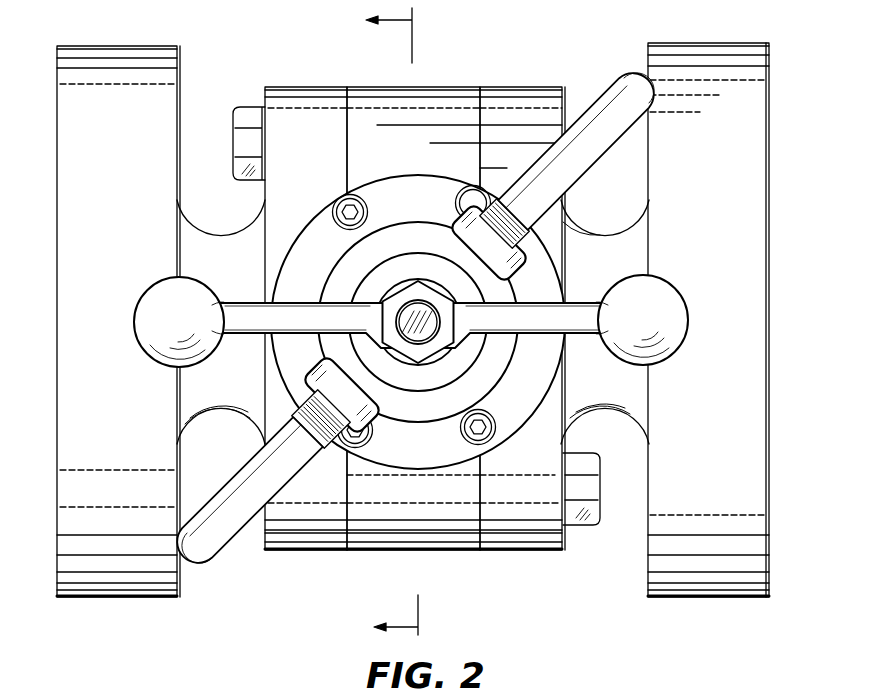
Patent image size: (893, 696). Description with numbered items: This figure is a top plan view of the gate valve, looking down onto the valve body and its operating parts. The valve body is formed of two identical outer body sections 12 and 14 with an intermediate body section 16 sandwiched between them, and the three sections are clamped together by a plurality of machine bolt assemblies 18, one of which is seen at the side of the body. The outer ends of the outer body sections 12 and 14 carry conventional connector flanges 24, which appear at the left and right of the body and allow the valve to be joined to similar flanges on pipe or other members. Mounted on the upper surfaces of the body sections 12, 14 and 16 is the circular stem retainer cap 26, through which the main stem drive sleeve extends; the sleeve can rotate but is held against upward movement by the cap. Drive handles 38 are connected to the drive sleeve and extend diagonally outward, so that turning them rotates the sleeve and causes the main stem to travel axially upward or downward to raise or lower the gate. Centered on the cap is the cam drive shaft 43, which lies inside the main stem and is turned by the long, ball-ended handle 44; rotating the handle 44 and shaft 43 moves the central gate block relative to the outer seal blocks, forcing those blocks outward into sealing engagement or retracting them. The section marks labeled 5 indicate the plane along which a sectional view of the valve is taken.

The section line 5- 5 is at (382, 324).
The outer body section 12 is at (288, 90).
The outer body section 14 is at (532, 93).
The intermediate body section 16 is at (362, 90).
The machine bolt assembly 18 is at (588, 527).
The connector flange 24 is at (107, 46).
The stem retainer cap 26 is at (415, 455).
The drive handle 38 is at (205, 562).
The cam drive shaft 43 is at (428, 322).
The handle 44 is at (680, 316).